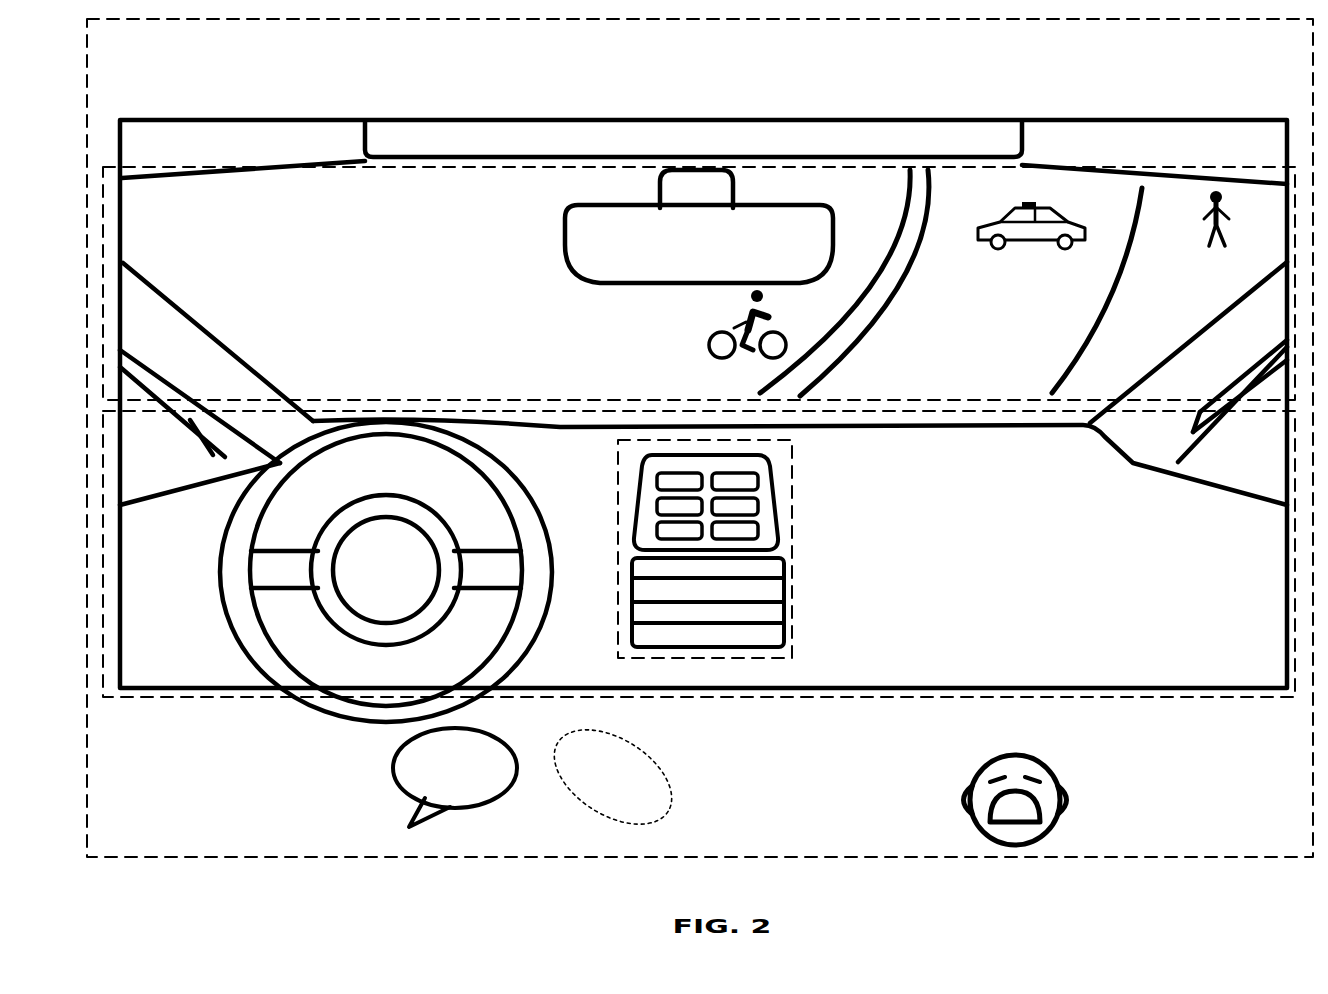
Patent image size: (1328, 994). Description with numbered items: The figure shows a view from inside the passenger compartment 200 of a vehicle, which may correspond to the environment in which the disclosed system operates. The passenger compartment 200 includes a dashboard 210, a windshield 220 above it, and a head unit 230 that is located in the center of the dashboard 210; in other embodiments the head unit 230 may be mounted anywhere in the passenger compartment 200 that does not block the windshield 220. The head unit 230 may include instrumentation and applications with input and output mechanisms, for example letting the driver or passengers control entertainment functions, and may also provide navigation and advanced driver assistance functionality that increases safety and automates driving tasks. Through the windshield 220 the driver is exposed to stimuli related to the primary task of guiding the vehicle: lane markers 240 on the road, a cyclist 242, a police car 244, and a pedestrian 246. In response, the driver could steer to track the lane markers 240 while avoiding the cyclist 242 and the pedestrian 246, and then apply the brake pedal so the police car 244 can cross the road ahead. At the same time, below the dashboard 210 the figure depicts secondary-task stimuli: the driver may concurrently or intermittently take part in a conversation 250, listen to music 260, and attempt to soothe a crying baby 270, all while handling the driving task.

The passenger compartment 200 is at (857, 56).
The dashboard 210 is at (203, 697).
The windshield 220 is at (588, 166).
The head unit 230 is at (792, 650).
The lane markers 240 is at (885, 527).
The cyclist 242 is at (705, 300).
The police car 244 is at (1043, 248).
The pedestrian 246 is at (1207, 247).
The conversation 250 is at (393, 768).
The music 260 is at (672, 780).
The crying baby 270 is at (1040, 753).